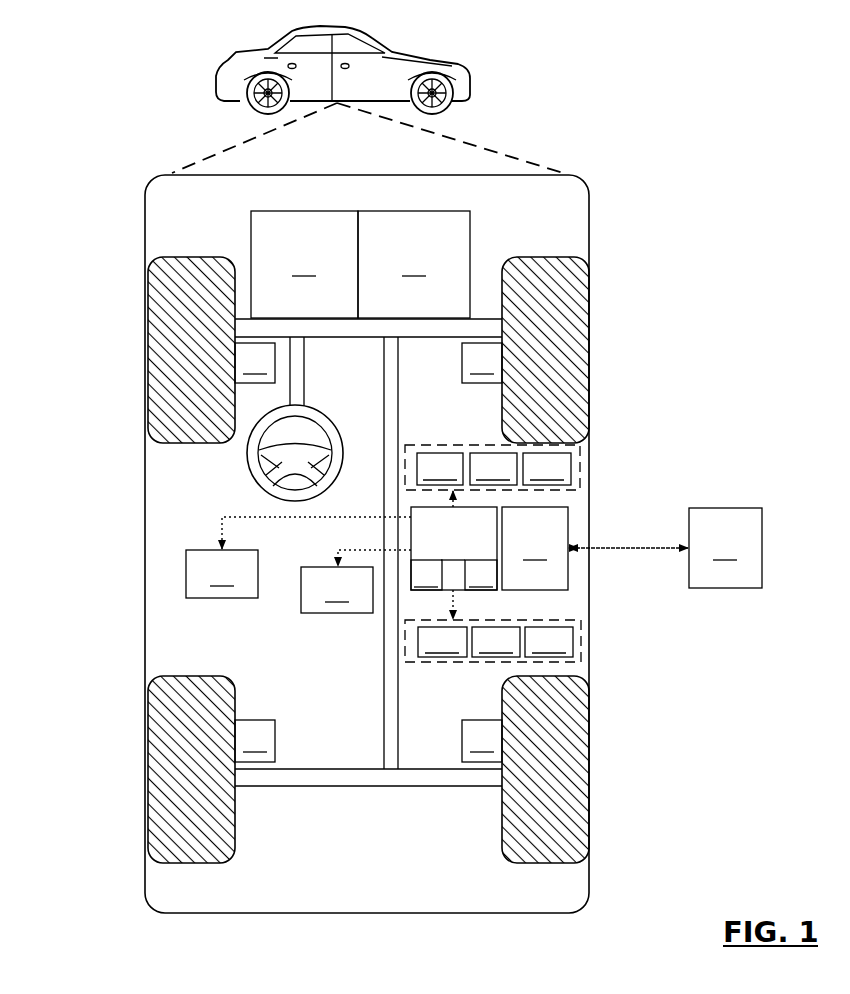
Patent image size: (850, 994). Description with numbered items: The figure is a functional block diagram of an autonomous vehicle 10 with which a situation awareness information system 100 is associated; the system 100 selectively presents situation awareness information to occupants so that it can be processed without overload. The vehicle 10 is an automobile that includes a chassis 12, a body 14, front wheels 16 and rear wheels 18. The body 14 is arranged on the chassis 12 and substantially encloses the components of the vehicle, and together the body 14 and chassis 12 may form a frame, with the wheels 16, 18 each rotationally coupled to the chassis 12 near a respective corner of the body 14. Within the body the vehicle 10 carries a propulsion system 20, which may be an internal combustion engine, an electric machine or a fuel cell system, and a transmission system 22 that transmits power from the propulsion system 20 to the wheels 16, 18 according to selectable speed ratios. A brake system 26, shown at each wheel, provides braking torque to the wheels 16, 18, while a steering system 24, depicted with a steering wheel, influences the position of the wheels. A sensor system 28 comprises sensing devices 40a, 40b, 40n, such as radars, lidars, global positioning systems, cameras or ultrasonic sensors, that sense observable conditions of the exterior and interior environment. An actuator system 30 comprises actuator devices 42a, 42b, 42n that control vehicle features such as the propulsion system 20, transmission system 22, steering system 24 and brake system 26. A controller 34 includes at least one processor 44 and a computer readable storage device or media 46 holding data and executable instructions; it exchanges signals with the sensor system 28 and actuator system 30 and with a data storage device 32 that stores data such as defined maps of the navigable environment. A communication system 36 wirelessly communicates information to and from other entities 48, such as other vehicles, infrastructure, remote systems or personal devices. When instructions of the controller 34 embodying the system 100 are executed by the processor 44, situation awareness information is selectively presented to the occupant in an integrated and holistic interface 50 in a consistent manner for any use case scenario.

The vehicle 10 is at (218, 88).
The situation awareness information system 100 is at (614, 186).
The chassis 12 is at (384, 700).
The body 14 is at (145, 531).
The front wheels 16 is at (187, 257).
The rear wheels 18 is at (205, 863).
The propulsion system 20 is at (304, 264).
The transmission system 22 is at (414, 264).
The steering system 24 is at (325, 365).
The brake system 26 is at (368, 552).
The sensor system 28 is at (432, 446).
The actuator system 30 is at (452, 663).
The data storage device 32 is at (337, 590).
The controller 34 is at (454, 548).
The communication system 36 is at (535, 548).
The sensing device 40a is at (440, 469).
The sensing device 40b is at (493, 469).
The sensing device 40n is at (547, 469).
The actuator device 42a is at (442, 642).
The actuator device 42b is at (496, 642).
The actuator device 42n is at (549, 642).
The processor 44 is at (426, 575).
The computer readable storage device or media 46 is at (481, 575).
The other entities 48 is at (725, 548).
The integrated interface 50 is at (222, 574).